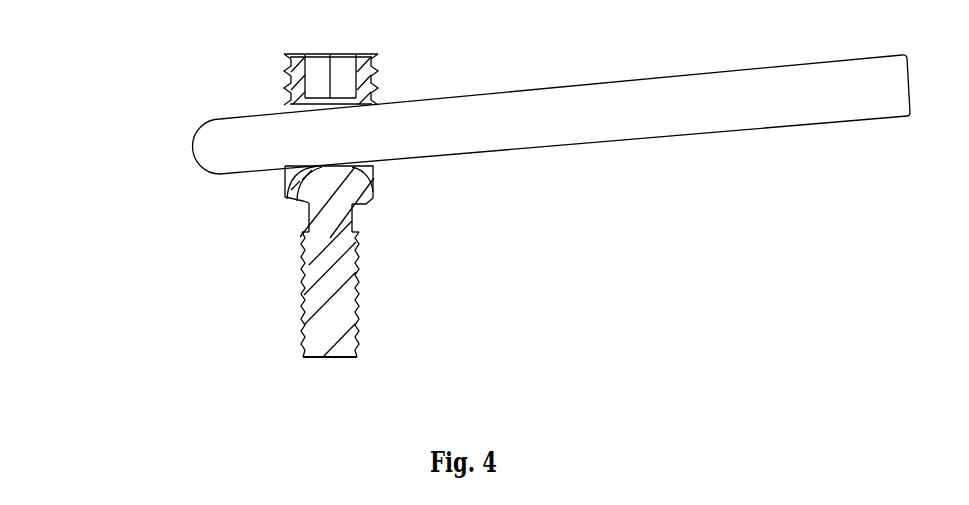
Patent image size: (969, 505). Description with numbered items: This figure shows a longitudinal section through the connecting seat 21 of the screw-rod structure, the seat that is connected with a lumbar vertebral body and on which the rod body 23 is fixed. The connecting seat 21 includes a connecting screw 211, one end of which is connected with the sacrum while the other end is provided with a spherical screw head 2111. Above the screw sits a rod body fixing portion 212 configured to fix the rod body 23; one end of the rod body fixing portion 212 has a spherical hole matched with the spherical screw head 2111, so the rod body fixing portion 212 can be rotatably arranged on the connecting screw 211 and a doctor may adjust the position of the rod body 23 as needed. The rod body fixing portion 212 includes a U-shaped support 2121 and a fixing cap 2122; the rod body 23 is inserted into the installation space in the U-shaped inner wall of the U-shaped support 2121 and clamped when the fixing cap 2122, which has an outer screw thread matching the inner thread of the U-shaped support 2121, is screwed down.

The connecting seat 21 is at (327, 186).
The connecting screw 211 is at (361, 261).
The spherical screw head 2111 is at (343, 180).
The rod body fixing portion 212 is at (231, 127).
The U-shaped support 2121 is at (294, 201).
The fixing cap 2122 is at (291, 68).
The rod body 23 is at (502, 118).